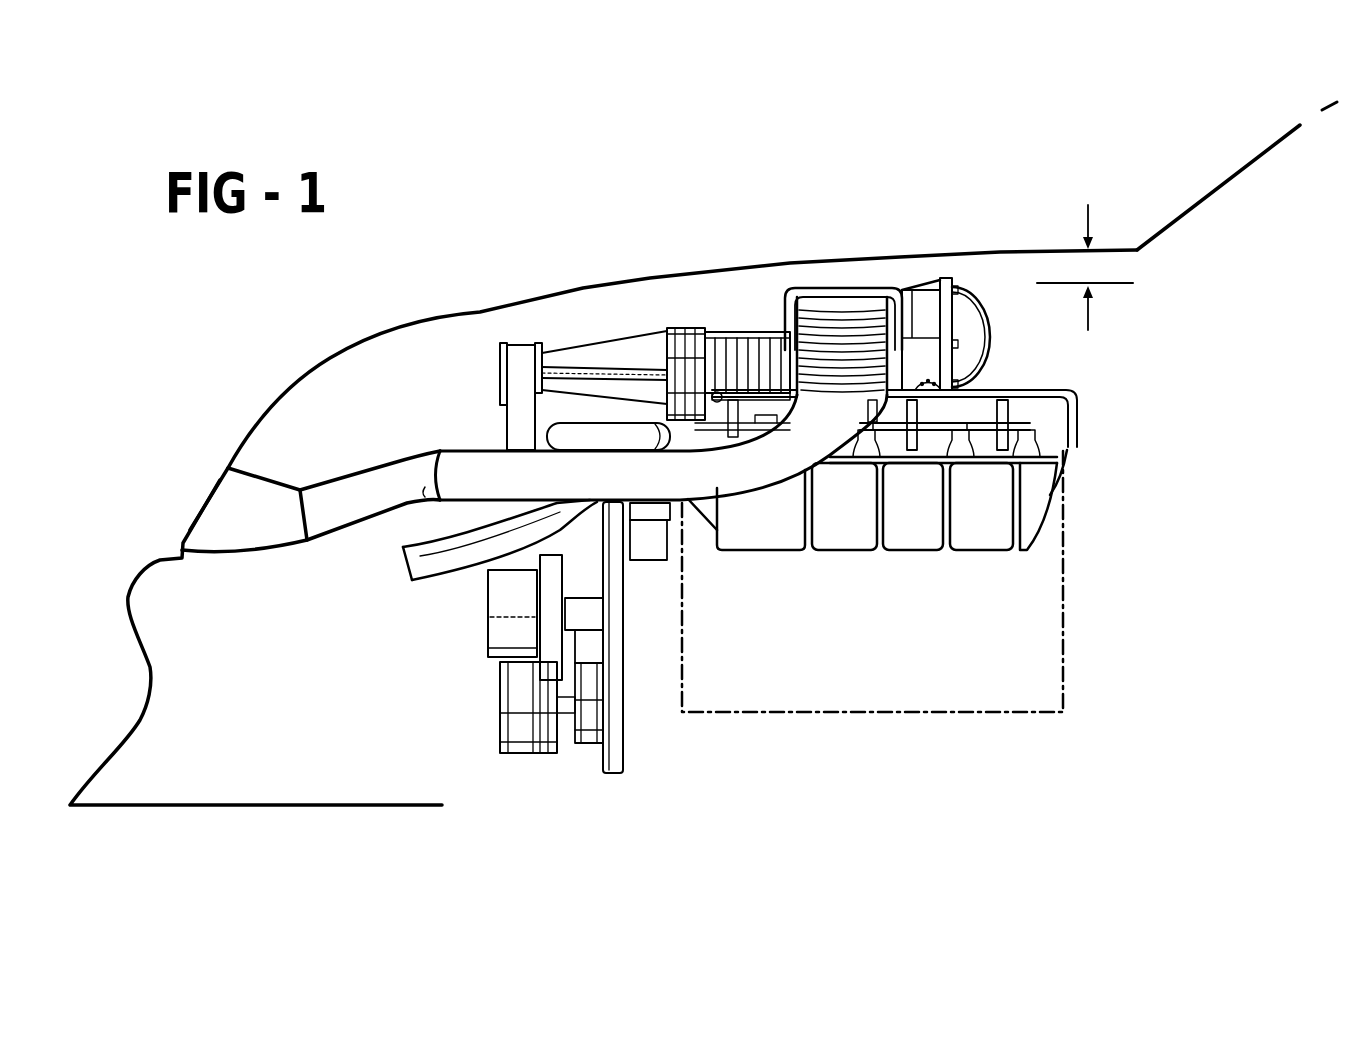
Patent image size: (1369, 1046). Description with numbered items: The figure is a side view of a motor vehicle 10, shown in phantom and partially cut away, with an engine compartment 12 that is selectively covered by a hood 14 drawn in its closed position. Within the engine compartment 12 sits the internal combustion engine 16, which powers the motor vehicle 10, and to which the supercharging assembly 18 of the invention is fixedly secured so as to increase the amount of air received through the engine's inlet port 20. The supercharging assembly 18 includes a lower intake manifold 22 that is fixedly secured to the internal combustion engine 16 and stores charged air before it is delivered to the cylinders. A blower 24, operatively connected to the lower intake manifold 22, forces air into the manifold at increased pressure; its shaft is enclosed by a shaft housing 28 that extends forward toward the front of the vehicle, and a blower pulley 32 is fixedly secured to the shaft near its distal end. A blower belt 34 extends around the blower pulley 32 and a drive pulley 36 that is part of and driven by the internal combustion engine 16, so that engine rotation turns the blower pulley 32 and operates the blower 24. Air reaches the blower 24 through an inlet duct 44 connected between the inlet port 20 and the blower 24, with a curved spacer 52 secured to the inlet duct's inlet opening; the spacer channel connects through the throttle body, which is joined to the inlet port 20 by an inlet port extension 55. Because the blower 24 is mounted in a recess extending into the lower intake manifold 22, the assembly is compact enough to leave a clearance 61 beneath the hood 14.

The motor vehicle 10 is at (1203, 197).
The engine compartment 12 is at (349, 688).
The hood 14 is at (583, 287).
The internal combustion engine 16 is at (788, 714).
The supercharging assembly 18 is at (995, 343).
The inlet port 20 is at (250, 478).
The lower intake manifold 22 is at (908, 552).
The blower 24 is at (774, 334).
The shaft housing 28 is at (607, 340).
The blower pulley 32 is at (500, 353).
The blower belt 34 is at (507, 423).
The drive pulley 36 is at (500, 745).
The inlet duct 44 is at (954, 282).
The spacer 52 is at (858, 278).
The inlet port extension 55 is at (575, 535).
The clearance 61 is at (1085, 267).